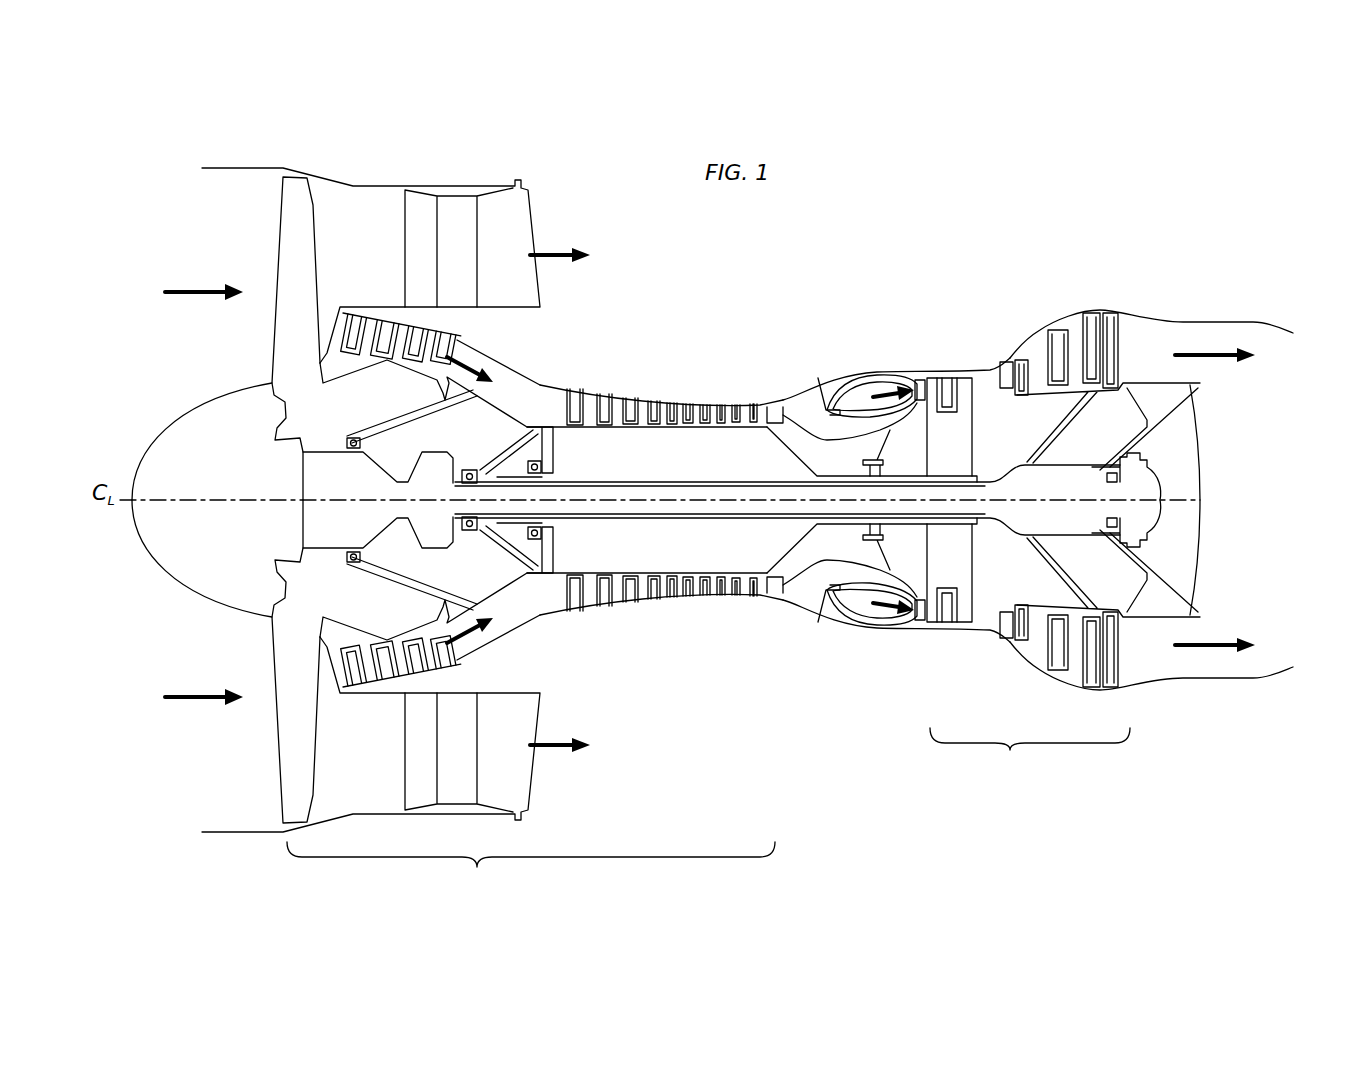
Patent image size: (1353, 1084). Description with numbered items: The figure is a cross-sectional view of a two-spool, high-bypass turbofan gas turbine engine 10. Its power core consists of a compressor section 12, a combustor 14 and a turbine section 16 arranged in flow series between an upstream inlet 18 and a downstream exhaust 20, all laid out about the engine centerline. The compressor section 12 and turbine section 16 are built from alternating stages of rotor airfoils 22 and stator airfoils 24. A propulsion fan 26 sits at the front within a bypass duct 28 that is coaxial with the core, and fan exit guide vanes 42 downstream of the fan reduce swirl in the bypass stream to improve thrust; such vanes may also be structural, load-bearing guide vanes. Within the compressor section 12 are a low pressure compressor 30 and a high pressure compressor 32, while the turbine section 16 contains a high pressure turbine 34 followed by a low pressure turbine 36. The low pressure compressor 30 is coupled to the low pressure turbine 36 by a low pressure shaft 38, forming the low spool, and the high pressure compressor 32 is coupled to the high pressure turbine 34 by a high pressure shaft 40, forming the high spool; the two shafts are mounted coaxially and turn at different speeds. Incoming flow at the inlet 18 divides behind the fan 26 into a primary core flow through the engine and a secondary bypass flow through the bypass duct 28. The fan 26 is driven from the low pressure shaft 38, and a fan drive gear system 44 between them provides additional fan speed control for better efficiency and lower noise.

The gas turbine engine 10 is at (165, 142).
The compressor section 12 is at (531, 869).
The combustor 14 is at (873, 377).
The turbine section 16 is at (1030, 755).
The inlet 18 is at (190, 384).
The exhaust 20 is at (1243, 452).
The rotor airfoils 22 is at (593, 400).
The stator airfoils 24 is at (630, 403).
The propulsion fan 26 is at (290, 253).
The bypass duct 28 is at (386, 256).
The low pressure compressor 30 is at (503, 657).
The high pressure compressor 32 is at (678, 607).
The high pressure turbine 34 is at (958, 642).
The low pressure turbine 36 is at (1022, 680).
The low pressure shaft 38 is at (705, 510).
The high pressure shaft 40 is at (788, 533).
The fan exit guide vanes 42 is at (417, 203).
The fan drive gear system 44 is at (437, 452).